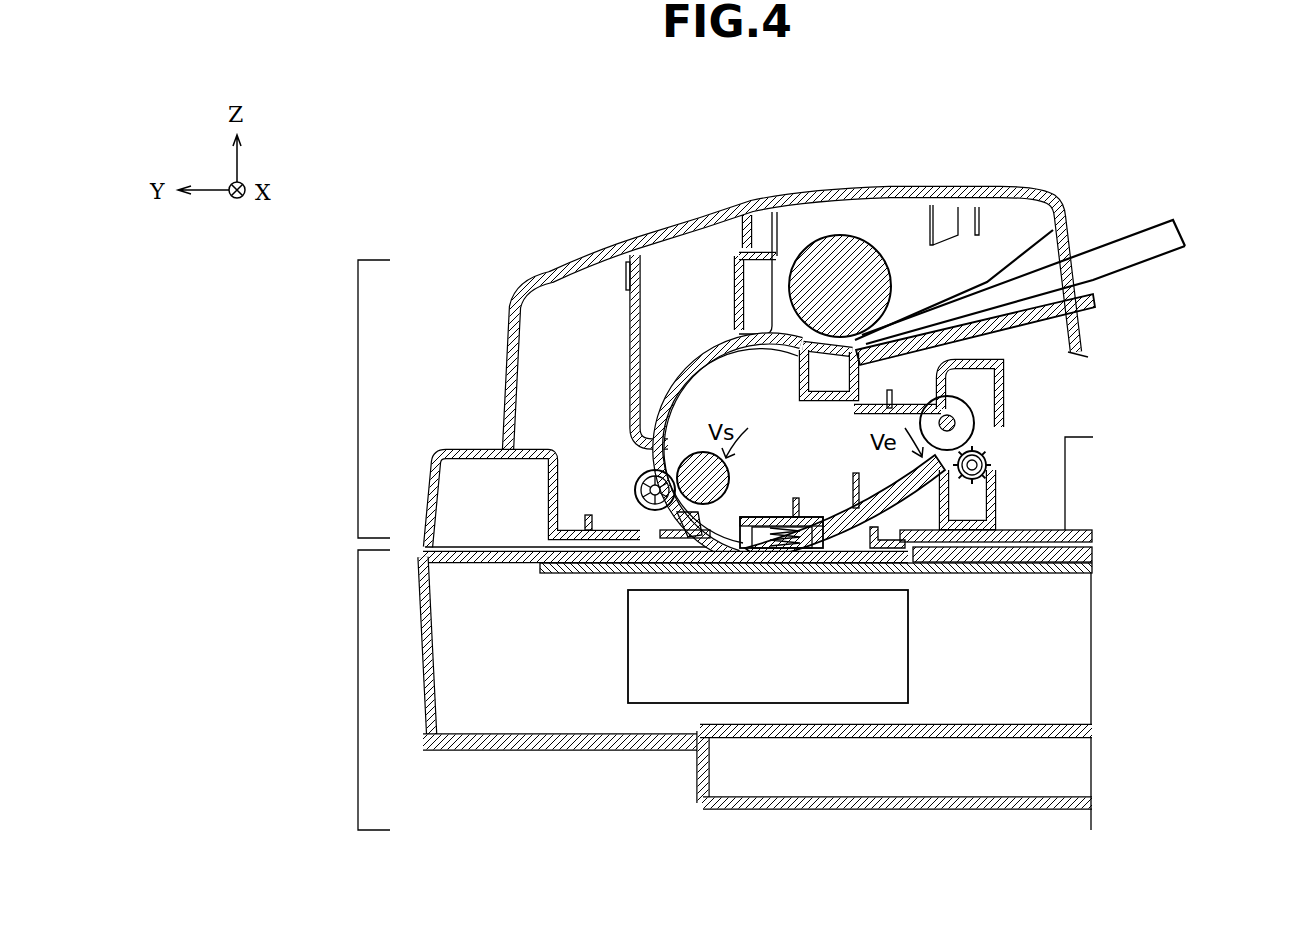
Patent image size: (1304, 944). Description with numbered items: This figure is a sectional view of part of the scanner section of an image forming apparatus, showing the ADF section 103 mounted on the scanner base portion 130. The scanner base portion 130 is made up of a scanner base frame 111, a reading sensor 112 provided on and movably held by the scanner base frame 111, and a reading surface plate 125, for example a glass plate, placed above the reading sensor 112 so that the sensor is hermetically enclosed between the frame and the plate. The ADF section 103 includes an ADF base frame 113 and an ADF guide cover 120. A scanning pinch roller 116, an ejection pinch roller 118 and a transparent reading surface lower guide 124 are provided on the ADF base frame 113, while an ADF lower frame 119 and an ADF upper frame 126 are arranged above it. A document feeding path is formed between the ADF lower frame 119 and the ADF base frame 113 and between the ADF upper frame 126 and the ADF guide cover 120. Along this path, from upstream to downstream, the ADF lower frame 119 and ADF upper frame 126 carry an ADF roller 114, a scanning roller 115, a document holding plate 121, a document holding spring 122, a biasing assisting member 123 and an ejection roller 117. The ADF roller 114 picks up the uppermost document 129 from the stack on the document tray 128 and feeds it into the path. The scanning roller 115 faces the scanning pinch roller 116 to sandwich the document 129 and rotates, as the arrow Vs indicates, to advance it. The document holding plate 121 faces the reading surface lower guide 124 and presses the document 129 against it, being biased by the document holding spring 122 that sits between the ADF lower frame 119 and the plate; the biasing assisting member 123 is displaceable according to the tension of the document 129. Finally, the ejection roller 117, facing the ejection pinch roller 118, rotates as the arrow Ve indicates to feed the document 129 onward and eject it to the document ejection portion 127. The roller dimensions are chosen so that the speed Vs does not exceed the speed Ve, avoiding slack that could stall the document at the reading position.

The ADF section 103 is at (330, 399).
The scanner base portion 130 is at (330, 690).
The scanner base frame 111 is at (758, 659).
The reading sensor 112 is at (748, 735).
The ADF base frame 113 is at (756, 369).
The ADF roller 114 is at (852, 224).
The scanning roller 115 is at (647, 293).
The scanning pinch roller 116 is at (624, 341).
The ejection roller 117 is at (1020, 258).
The ejection pinch roller 118 is at (1048, 391).
The ADF lower frame 119 is at (729, 334).
The ADF guide cover 120 is at (753, 223).
The document holding plate 121 is at (781, 699).
The document holding spring 122 is at (862, 314).
The biasing assisting member 123 is at (814, 488).
The reading surface lower guide 124 is at (816, 668).
The reading surface plate 125 is at (896, 727).
The ADF upper frame 126 is at (975, 252).
The document ejection portion 127 is at (1027, 467).
The document tray 128 is at (1053, 293).
The document 129 is at (1073, 255).